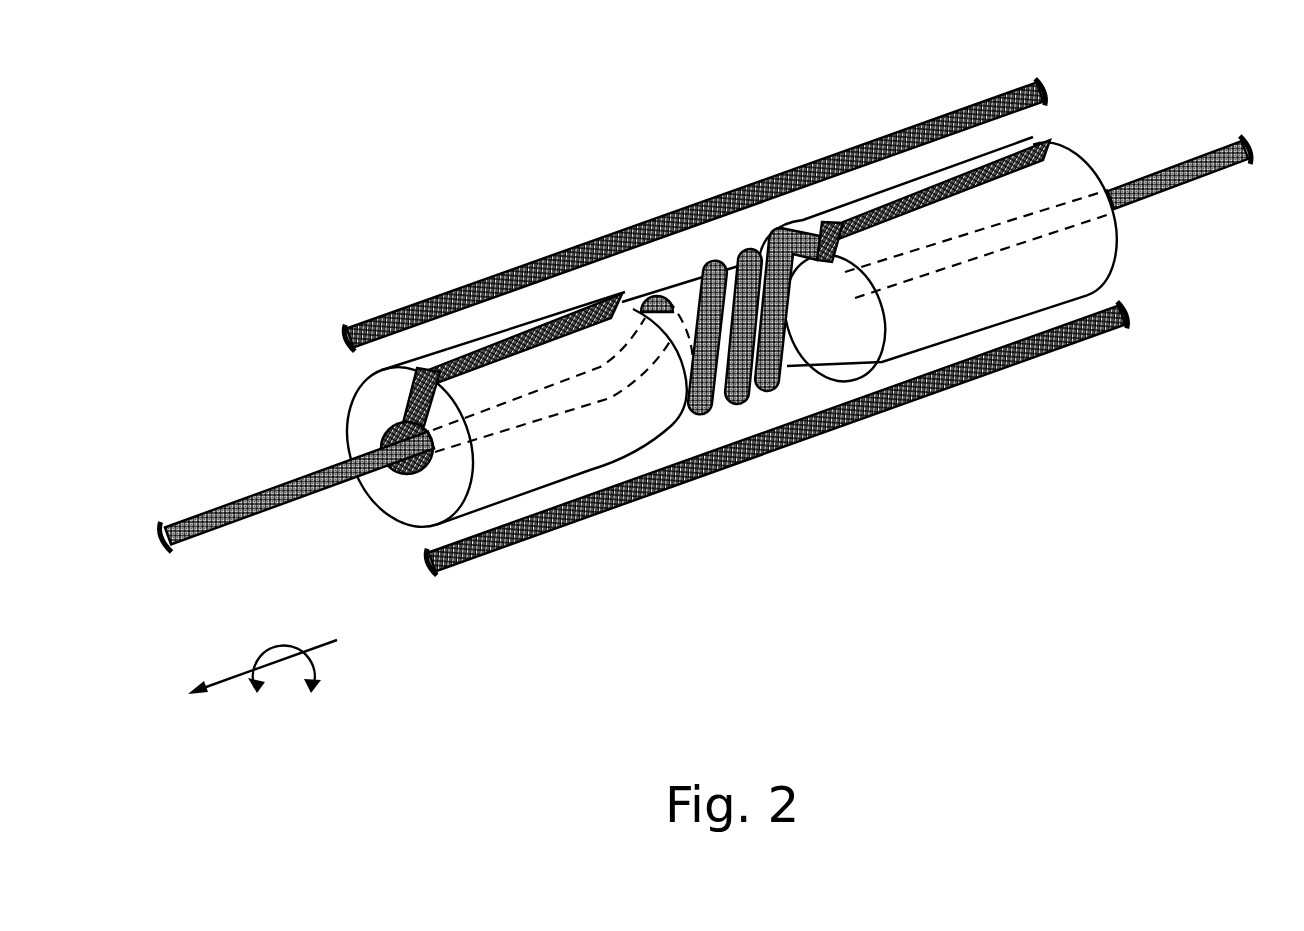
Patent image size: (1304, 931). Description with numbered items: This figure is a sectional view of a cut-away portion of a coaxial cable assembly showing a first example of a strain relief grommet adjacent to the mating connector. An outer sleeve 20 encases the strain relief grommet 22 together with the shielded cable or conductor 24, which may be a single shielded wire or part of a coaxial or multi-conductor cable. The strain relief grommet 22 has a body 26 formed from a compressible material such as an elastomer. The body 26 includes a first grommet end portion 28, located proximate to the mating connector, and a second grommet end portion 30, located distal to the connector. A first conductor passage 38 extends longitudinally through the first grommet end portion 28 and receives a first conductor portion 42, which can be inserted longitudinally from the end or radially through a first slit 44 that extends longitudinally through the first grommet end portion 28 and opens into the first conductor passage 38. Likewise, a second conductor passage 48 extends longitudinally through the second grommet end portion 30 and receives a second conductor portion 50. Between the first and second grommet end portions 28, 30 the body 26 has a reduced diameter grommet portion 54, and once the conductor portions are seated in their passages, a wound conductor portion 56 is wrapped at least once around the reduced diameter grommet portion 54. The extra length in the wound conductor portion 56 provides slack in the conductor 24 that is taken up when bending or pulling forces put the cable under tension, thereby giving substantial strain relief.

The outer sleeve 20 is at (843, 150).
The strain relief grommet 22 is at (308, 374).
The conductor 24 is at (345, 462).
The body 26 is at (566, 434).
The first grommet end portion 28 is at (996, 221).
The second grommet end portion 30 is at (500, 422).
The first conductor passage 38 is at (1013, 235).
The first conductor portion 42 is at (1172, 187).
The first slit 44 is at (1063, 147).
The second conductor passage 48 is at (563, 393).
The second conductor portion 50 is at (398, 452).
The reduced diameter grommet portion 54 is at (795, 313).
The wound conductor portion 56 is at (757, 387).